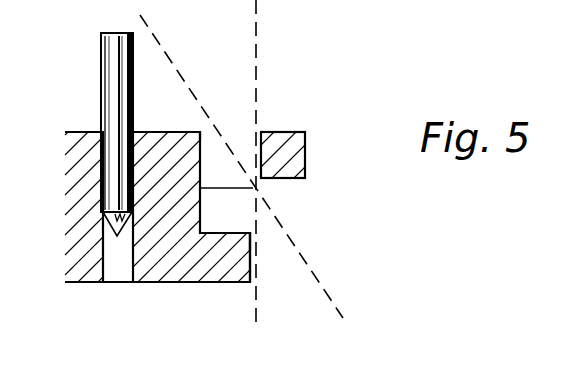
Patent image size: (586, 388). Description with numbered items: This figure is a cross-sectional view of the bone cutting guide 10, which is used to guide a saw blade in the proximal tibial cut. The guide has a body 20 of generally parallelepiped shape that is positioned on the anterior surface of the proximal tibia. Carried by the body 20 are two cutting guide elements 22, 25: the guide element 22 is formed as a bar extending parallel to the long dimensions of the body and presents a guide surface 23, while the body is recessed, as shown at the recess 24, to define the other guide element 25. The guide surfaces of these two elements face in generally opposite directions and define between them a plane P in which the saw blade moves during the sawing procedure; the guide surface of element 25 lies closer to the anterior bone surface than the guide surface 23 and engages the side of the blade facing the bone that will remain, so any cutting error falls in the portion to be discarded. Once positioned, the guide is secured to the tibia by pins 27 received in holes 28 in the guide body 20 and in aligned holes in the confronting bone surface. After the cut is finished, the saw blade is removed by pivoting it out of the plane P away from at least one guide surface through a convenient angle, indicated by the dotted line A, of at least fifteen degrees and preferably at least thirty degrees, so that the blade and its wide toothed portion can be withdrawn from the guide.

The bone cutting guide 10 is at (180, 148).
The body 20 is at (168, 258).
The cutting guide element 22 is at (305, 152).
The guide surface 23 is at (256, 155).
The recess 24 is at (252, 188).
The cutting guide element 25 is at (235, 272).
The pin 27 is at (112, 75).
The hole 28 is at (110, 283).
The dotted line A is at (142, 16).
The plane P is at (256, 13).